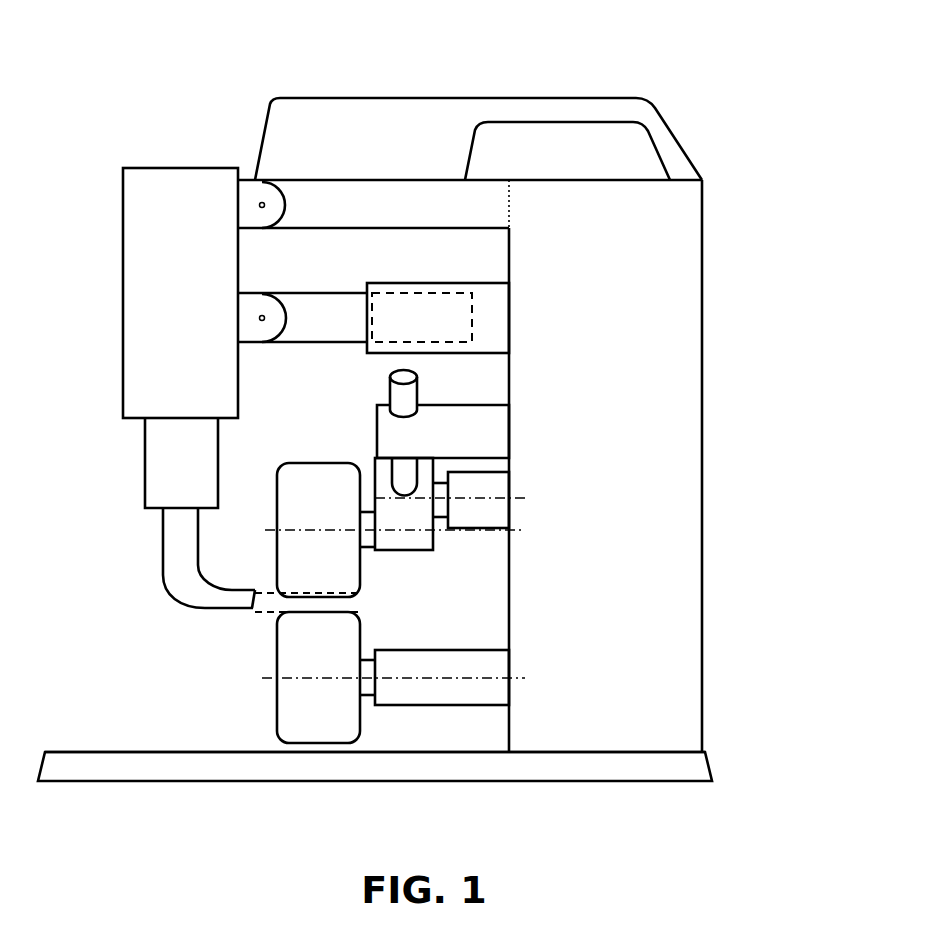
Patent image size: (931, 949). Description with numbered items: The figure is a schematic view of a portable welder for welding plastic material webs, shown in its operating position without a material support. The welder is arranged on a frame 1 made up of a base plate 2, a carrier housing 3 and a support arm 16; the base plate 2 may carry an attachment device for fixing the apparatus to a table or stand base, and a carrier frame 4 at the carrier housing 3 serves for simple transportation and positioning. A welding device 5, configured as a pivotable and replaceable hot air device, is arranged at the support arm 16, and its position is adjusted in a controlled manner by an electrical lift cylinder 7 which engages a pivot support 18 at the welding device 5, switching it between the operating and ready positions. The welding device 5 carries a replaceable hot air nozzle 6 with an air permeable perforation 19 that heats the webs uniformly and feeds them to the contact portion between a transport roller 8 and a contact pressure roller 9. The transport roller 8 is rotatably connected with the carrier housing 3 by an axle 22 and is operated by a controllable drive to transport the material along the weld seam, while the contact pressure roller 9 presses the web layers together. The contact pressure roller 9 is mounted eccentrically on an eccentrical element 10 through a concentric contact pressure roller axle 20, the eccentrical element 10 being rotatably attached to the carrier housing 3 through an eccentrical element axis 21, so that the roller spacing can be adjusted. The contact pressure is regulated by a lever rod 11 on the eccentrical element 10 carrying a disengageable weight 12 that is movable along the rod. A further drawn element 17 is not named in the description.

The frame 1 is at (757, 475).
The base plate 2 is at (690, 770).
The carrier housing 3 is at (675, 240).
The carrier frame 4 is at (460, 112).
The welding device 5 is at (170, 205).
The hot air nozzle 6 is at (163, 568).
The electrical lift cylinder 7 is at (395, 312).
The transport roller 8 is at (320, 642).
The contact pressure roller 9 is at (300, 525).
The eccentrical element 10 is at (410, 548).
The lever rod 11 is at (405, 395).
The weight 12 is at (393, 447).
The support arm 16 is at (378, 203).
The upper guide roller 17 is at (256, 198).
The pivot support 18 is at (250, 313).
The air permeable perforation 19 is at (265, 612).
The contact pressure roller axle 20 is at (365, 538).
The eccentrical element axis 21 is at (488, 516).
The contact pressure roller axle 22 is at (492, 660).